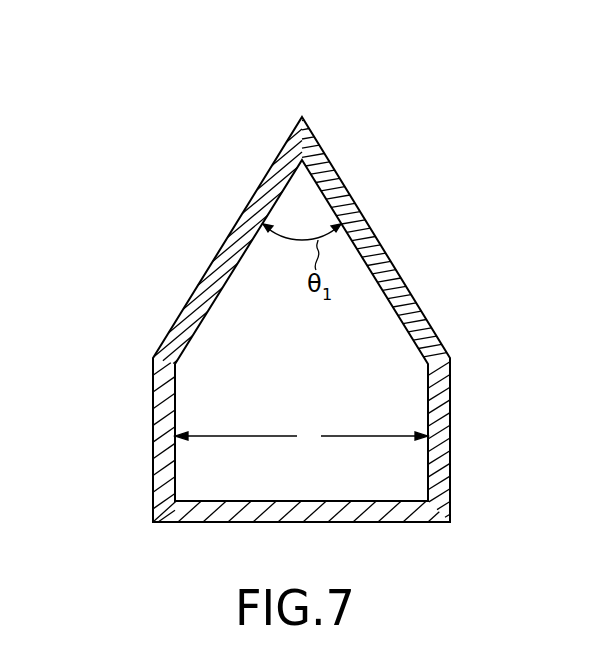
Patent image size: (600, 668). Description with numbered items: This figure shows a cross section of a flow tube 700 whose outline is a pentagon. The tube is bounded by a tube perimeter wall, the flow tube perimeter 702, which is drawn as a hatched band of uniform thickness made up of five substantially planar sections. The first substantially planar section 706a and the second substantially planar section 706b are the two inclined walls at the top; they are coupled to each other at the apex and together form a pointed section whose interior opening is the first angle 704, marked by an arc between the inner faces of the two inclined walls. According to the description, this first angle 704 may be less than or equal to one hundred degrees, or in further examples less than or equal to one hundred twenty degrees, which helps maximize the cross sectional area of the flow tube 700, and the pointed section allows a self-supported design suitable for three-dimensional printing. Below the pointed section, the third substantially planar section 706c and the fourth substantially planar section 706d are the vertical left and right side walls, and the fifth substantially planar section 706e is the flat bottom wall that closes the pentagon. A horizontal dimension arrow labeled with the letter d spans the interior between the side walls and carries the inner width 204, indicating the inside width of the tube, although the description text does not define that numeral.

The flow tube 700 is at (118, 99).
The flow tube perimeter 702 is at (364, 220).
The first angle θ1 704 is at (282, 242).
The inner width d 204 is at (353, 437).
The first substantially planar section 706a is at (218, 263).
The second substantially planar section 706b is at (409, 292).
The third substantially planar section 706c is at (153, 388).
The fourth substantially planar section 706d is at (450, 396).
The fifth substantially planar section 706e is at (218, 522).